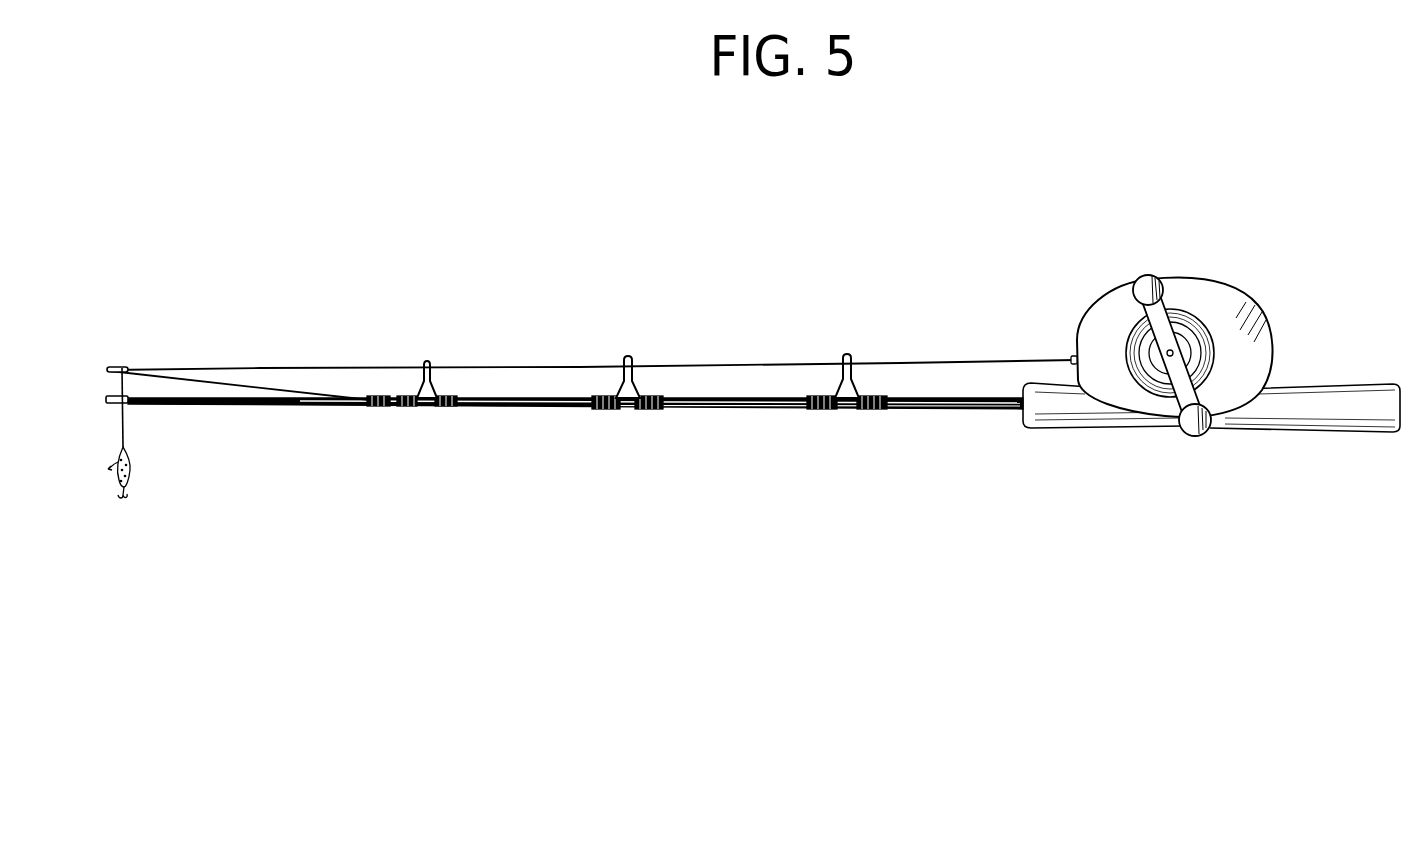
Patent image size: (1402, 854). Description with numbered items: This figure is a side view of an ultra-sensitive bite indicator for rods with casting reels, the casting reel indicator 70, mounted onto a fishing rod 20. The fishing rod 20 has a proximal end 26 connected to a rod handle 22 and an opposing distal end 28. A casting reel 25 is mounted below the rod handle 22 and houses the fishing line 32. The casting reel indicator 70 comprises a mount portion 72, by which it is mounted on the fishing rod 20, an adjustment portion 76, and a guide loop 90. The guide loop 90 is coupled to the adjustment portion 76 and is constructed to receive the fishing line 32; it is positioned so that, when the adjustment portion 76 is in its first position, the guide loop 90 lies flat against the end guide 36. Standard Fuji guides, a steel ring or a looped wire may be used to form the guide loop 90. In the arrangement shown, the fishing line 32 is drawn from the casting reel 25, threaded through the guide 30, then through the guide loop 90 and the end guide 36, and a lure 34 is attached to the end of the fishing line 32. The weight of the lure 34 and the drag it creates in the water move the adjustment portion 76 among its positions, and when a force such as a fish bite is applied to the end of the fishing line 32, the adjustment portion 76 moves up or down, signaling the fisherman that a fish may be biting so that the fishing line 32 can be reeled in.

The fishing rod 20 is at (717, 410).
The rod handle 22 is at (1290, 408).
The casting reel 25 is at (1208, 295).
The proximal end 26 is at (1018, 415).
The distal end 28 is at (108, 396).
The guide 30 is at (425, 345).
The fishing line 32 is at (297, 366).
The lure 34 is at (132, 455).
The end guide 36 is at (110, 405).
The casting reel indicator 70 is at (232, 330).
The mount portion 72 is at (380, 409).
The adjustment portion 76 is at (203, 378).
The guide loop 90 is at (122, 368).